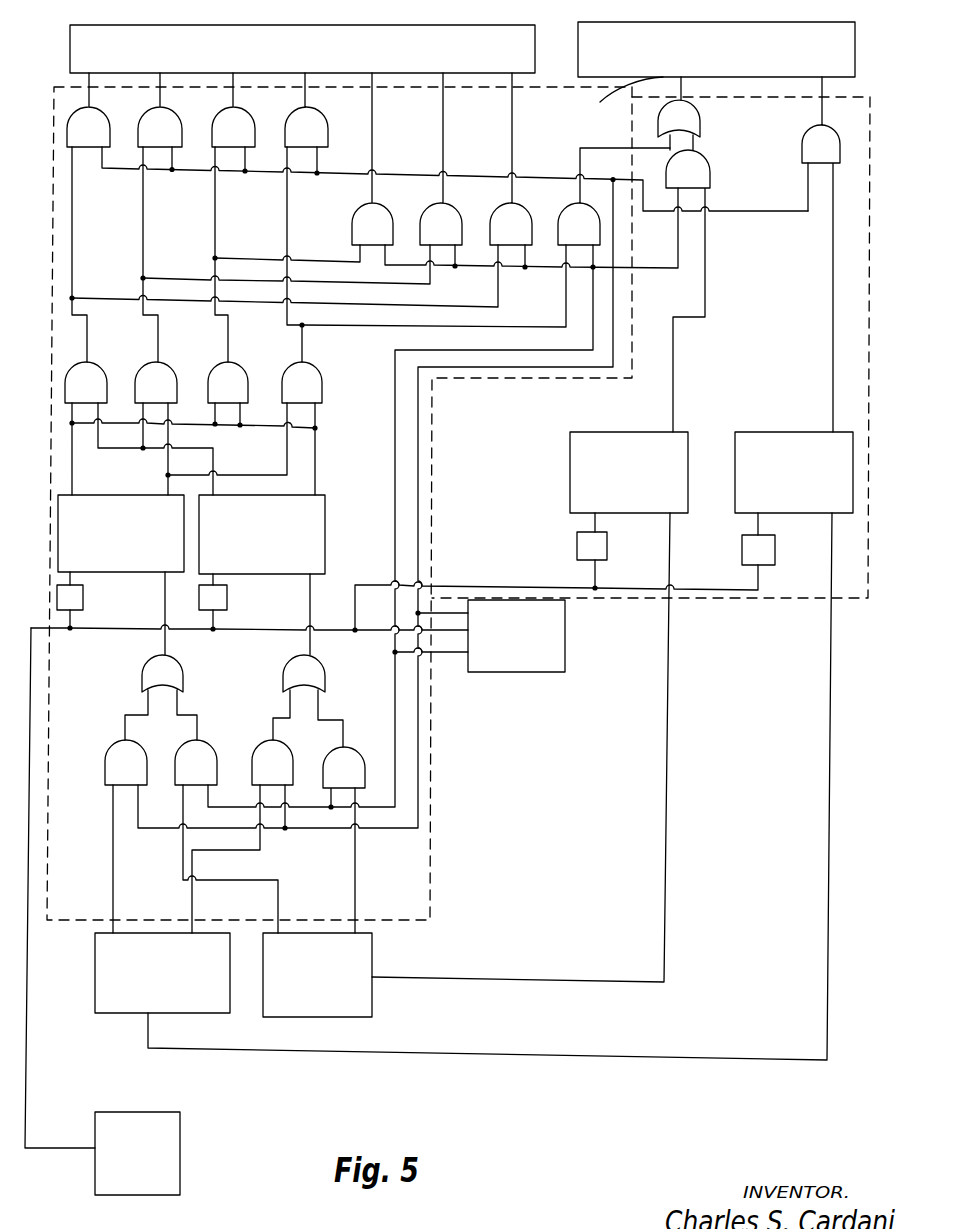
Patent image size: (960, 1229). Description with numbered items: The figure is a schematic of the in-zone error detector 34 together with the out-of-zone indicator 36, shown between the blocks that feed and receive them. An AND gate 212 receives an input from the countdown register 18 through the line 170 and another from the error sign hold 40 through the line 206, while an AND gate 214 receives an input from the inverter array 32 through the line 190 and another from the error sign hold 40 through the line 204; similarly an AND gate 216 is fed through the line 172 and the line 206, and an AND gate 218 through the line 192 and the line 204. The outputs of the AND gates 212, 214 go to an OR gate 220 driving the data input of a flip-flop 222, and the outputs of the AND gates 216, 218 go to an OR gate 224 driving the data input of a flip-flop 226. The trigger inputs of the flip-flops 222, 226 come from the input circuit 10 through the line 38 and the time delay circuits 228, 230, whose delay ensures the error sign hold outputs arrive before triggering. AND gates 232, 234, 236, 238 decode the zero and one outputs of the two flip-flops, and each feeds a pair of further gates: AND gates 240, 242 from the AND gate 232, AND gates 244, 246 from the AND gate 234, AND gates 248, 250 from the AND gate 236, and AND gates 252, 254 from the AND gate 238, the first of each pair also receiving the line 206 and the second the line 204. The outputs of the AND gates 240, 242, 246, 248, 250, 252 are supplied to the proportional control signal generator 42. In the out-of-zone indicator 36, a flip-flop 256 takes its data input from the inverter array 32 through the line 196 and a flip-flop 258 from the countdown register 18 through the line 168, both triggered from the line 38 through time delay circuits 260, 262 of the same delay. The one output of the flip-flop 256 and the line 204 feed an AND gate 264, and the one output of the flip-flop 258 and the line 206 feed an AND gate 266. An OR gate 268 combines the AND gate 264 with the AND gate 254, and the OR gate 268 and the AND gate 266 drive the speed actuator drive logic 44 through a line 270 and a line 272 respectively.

The input circuit 10 is at (143, 1185).
The countdown register 18 is at (105, 995).
The inverter array 32 is at (372, 952).
The in-zone error detector 34 is at (427, 850).
The out-of-zone indicator 36 is at (872, 330).
The line 38 is at (41, 1145).
The error sign hold 40 is at (565, 665).
The proportional control signal generator 42 is at (72, 42).
The speed actuator drive logic 44 is at (790, 77).
The line 168 is at (830, 662).
The line 170 is at (113, 830).
The line 172 is at (192, 902).
The line 190 is at (278, 903).
The line 192 is at (355, 892).
The line 196 is at (667, 884).
The line 204 is at (448, 655).
The line 206 is at (442, 613).
The AND gate 212 is at (110, 762).
The AND gate 214 is at (188, 756).
The AND gate 216 is at (263, 760).
The AND gate 218 is at (350, 753).
The OR gate 220 is at (170, 674).
The flip-flop 222 is at (102, 503).
The OR gate 224 is at (325, 673).
The flip-flop 226 is at (326, 523).
The time delay circuit 228 is at (83, 598).
The time delay circuit 230 is at (227, 598).
The AND gate 232 is at (95, 368).
The AND gate 234 is at (160, 367).
The AND gate 236 is at (232, 368).
The AND gate 238 is at (319, 378).
The AND gate 240 is at (96, 127).
The AND gate 242 is at (515, 215).
The AND gate 244 is at (157, 147).
The AND gate 246 is at (448, 212).
The AND gate 248 is at (222, 146).
The AND gate 250 is at (378, 207).
The AND gate 252 is at (294, 146).
The AND gate 254 is at (582, 205).
The flip-flop 256 is at (688, 438).
The flip-flop 258 is at (788, 437).
The time delay circuit 260 is at (607, 548).
The time delay circuit 262 is at (775, 552).
The AND gate 264 is at (704, 163).
The AND gate 266 is at (803, 153).
The OR gate 268 is at (694, 118).
The line 270 is at (639, 98).
The line 272 is at (822, 109).